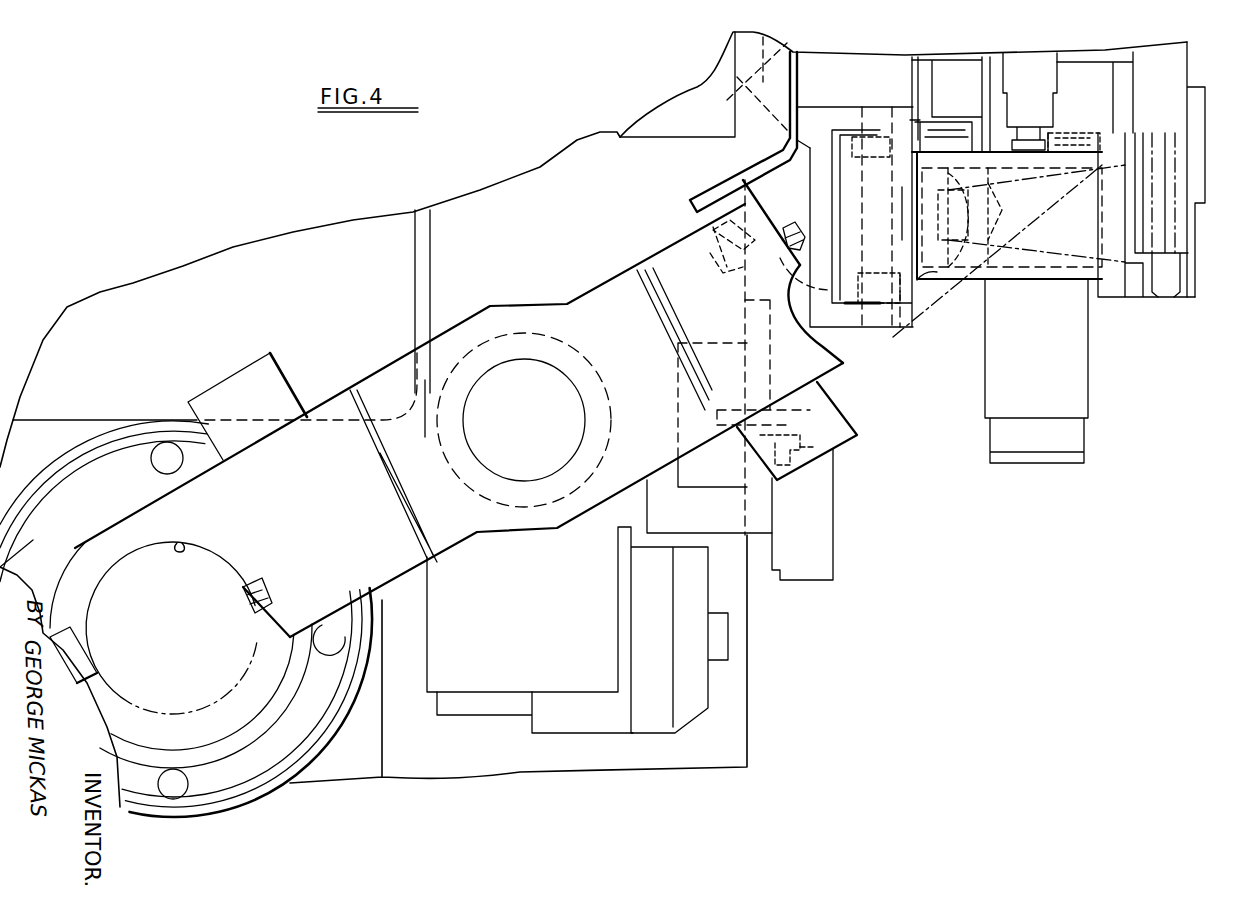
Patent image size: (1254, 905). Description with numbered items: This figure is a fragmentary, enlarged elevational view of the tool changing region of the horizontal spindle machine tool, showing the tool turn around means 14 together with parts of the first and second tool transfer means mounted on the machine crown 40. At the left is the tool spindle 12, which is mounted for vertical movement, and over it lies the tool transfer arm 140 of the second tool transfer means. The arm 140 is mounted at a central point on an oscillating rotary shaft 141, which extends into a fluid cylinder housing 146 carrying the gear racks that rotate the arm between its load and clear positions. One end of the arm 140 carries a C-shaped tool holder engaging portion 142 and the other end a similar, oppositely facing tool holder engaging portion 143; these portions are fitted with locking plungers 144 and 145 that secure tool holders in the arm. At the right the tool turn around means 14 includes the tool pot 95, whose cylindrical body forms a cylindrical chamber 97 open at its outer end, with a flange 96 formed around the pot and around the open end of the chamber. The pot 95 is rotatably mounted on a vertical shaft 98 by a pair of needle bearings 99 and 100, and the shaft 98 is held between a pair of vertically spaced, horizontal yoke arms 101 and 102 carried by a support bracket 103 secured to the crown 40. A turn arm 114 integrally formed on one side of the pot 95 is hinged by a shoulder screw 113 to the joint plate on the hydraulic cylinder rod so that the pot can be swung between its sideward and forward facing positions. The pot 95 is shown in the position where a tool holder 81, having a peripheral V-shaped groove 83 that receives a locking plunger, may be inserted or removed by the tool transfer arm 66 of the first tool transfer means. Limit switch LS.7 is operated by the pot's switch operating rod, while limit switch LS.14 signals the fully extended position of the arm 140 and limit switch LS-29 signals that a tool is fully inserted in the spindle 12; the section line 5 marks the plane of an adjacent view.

The section line 5- 5 is at (705, 33).
The tool spindle 12 is at (278, 804).
The 90° tool turn around means 14 is at (1018, 292).
The crown member 40 is at (732, 44).
The tool transfer arm 66 is at (1170, 118).
The tool holder 81 is at (1185, 290).
The V-shaped groove 83 is at (1177, 290).
The tool pot 95 is at (1052, 290).
The flange 96 is at (1115, 280).
The cylindrical chamber 97 is at (1030, 262).
The vertical shaft 98 is at (880, 181).
The needle bearing 99 is at (905, 338).
The needle bearing 100 is at (907, 140).
The yoke arm 101 is at (851, 313).
The yoke arm 102 is at (848, 113).
The support bracket 103 is at (733, 83).
The shoulder screw 113 is at (952, 122).
The turn arm 114 is at (972, 140).
The tool transfer arm 140 is at (600, 300).
The oscillating rotary shaft 141 is at (562, 396).
The C-shaped tool holder engaging portion 142 is at (183, 546).
The tool holder engaging portion 143 is at (950, 308).
The locking plunger 144 is at (258, 603).
The locking plunger 145 is at (800, 252).
The fluid cylinder housing 146 is at (515, 672).
The limit switch LS-7 LS.7 is at (1045, 42).
The limit switch LS-14 LS.14 is at (820, 543).
The limit switch LS-29 is at (718, 218).